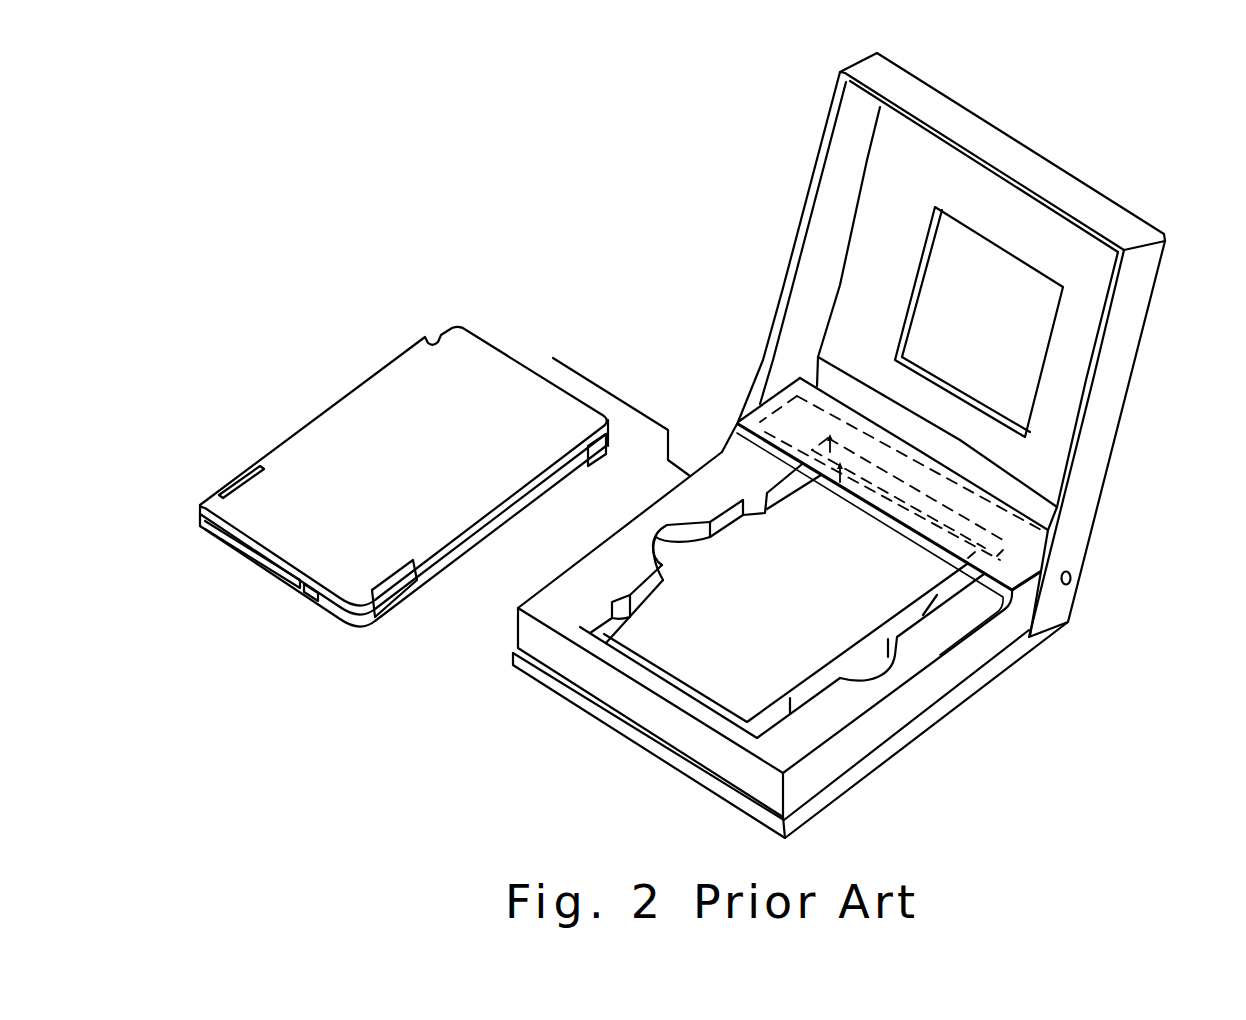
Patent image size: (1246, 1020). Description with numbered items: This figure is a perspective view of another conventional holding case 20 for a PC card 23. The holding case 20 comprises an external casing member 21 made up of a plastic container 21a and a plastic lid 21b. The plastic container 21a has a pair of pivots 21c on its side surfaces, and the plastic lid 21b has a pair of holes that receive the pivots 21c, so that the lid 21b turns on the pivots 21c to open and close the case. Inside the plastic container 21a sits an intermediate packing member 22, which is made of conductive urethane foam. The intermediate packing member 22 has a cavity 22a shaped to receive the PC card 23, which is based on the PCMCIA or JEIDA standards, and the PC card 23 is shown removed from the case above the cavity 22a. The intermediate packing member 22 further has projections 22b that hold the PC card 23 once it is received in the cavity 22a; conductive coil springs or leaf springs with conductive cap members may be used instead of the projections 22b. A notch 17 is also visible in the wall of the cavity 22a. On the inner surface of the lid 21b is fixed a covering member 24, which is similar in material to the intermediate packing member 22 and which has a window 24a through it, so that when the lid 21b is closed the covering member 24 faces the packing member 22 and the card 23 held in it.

The semicircular notch 17 is at (663, 530).
The holding case 20 is at (708, 298).
The external casing member 21 is at (867, 445).
The plastic container 21a is at (967, 701).
The plastic lid 21b is at (1063, 626).
The pivots 21c is at (1072, 578).
The intermediate packing member 22 is at (723, 625).
The cavity 22a is at (779, 640).
The projections 22b is at (756, 503).
The PC card 23 is at (513, 356).
The covering member 24 is at (1019, 307).
The window 24a is at (1040, 343).